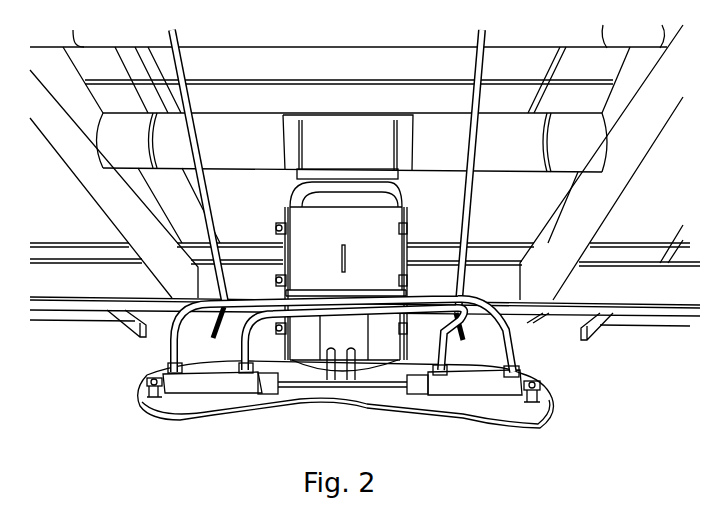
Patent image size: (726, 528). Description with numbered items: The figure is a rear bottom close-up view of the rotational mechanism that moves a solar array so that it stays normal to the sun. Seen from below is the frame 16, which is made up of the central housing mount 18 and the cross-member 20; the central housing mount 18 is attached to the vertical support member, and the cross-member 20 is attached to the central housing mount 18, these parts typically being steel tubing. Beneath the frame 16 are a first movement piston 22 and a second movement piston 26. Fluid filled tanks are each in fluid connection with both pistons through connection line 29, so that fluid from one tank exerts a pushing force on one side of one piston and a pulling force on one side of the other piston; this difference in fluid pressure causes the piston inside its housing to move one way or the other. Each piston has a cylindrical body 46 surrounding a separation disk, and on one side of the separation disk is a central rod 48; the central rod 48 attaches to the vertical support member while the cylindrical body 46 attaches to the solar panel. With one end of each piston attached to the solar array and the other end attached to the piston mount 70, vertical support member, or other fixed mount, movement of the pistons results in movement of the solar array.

The frame 16 is at (623, 167).
The central housing mount 18 is at (335, 125).
The cross-member 20 is at (500, 147).
The first movement piston 22 is at (180, 392).
The second movement piston 26 is at (510, 390).
The connection line 29 is at (181, 60).
The cylindrical body 46 is at (292, 384).
The central rod 48 is at (385, 382).
The piston mount 70 is at (495, 410).